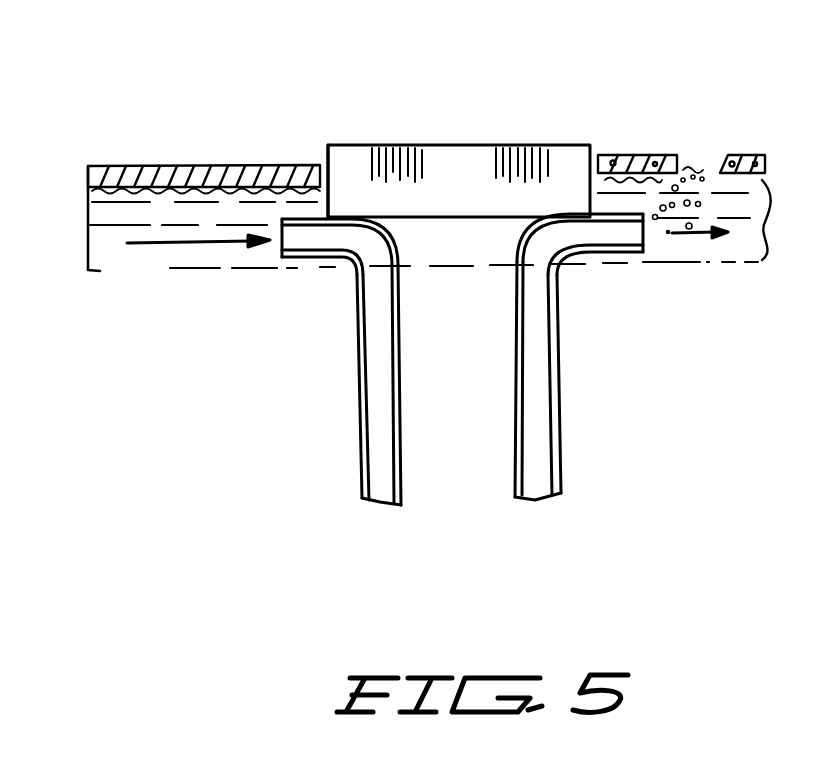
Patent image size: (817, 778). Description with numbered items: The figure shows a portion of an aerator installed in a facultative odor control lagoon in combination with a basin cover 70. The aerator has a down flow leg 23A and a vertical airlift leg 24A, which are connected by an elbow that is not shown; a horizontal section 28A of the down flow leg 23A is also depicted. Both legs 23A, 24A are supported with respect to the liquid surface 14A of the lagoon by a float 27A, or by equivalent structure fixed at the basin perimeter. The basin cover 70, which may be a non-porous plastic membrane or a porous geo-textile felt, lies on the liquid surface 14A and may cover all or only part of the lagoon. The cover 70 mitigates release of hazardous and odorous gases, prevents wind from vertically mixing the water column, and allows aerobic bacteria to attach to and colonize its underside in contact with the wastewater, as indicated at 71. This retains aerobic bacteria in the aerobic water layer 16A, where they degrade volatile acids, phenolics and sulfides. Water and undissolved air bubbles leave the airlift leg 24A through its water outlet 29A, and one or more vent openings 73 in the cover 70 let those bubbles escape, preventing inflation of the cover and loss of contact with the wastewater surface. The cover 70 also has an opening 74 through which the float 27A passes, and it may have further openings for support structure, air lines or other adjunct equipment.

The liquid surface 14A is at (222, 183).
The aerobic water layer 16A is at (737, 247).
The down flow leg 23A is at (360, 440).
The vertical airlift leg 24A is at (562, 438).
The float 27A is at (479, 172).
The first branch passage 28A is at (301, 262).
The water outlet 29A is at (621, 257).
The basin cover 70 is at (178, 157).
The attached aerobic bacteria 71 is at (176, 197).
The vent openings 73 is at (693, 150).
The opening 74 is at (340, 190).